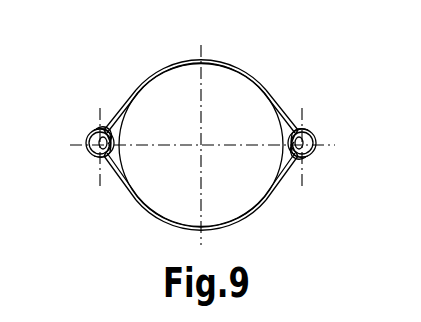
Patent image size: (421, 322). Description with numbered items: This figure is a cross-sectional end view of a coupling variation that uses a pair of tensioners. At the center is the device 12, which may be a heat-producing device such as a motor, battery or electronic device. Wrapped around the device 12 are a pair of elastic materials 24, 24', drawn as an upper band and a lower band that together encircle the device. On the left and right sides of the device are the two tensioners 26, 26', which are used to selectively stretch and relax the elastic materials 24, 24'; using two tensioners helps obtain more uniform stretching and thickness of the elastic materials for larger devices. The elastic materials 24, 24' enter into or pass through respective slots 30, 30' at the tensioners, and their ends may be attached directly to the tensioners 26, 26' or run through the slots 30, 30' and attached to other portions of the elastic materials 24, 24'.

The device 12 is at (248, 102).
The elastic material 24 is at (180, 93).
The elastic material 24' is at (201, 203).
The tensioner 26 is at (68, 149).
The tensioner 26' is at (343, 135).
The slot 30 is at (75, 118).
The slot 30' is at (331, 182).